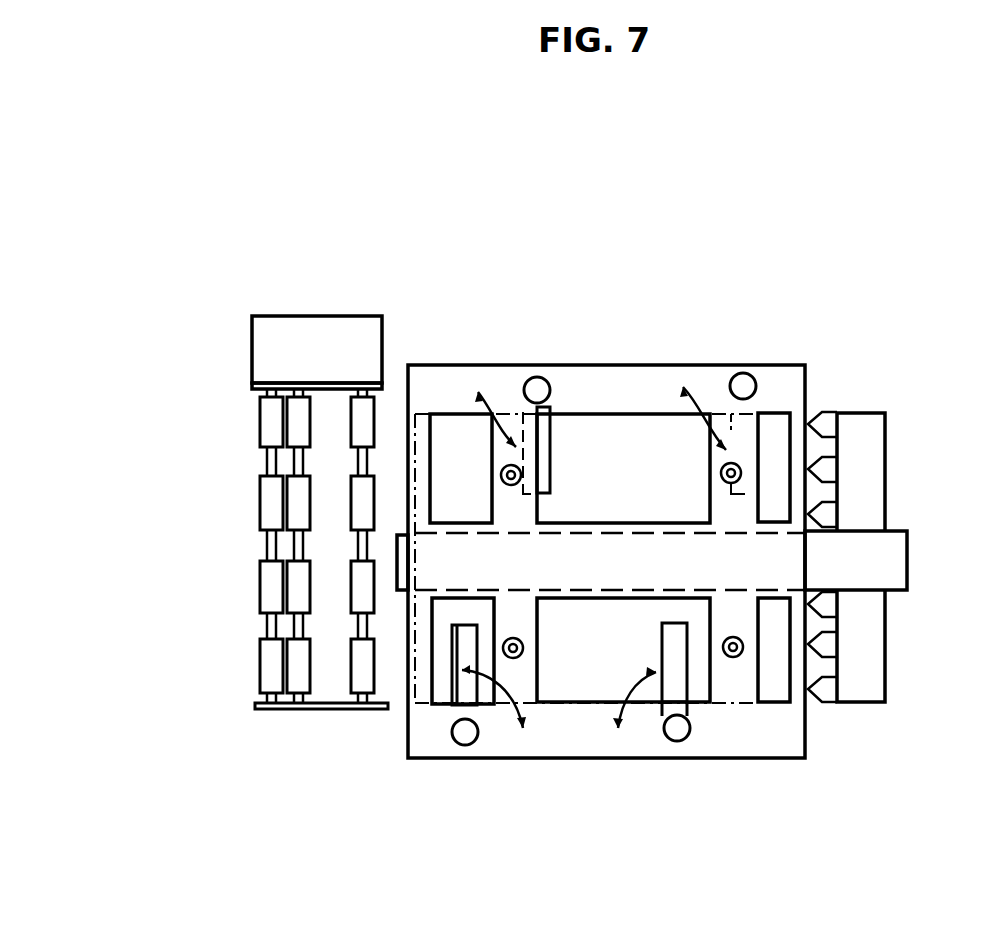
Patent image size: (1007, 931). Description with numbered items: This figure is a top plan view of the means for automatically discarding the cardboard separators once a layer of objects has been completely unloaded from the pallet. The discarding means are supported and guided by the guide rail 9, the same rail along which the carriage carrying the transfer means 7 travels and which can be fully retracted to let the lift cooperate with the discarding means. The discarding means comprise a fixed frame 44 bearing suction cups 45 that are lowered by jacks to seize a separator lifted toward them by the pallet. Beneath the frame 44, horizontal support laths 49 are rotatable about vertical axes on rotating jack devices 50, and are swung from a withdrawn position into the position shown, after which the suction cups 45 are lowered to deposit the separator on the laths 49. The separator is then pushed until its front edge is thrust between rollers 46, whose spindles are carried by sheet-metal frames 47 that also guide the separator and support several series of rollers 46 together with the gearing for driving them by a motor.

The transfer means 7 is at (885, 653).
The guide rail 9 is at (892, 563).
The fixed frame 44 is at (580, 378).
The suction cups 45 is at (718, 472).
The rollers 46 is at (270, 432).
The sheet-metal frames 47 is at (251, 383).
The support laths 49 is at (548, 448).
The rotating jack devices 50 is at (740, 374).